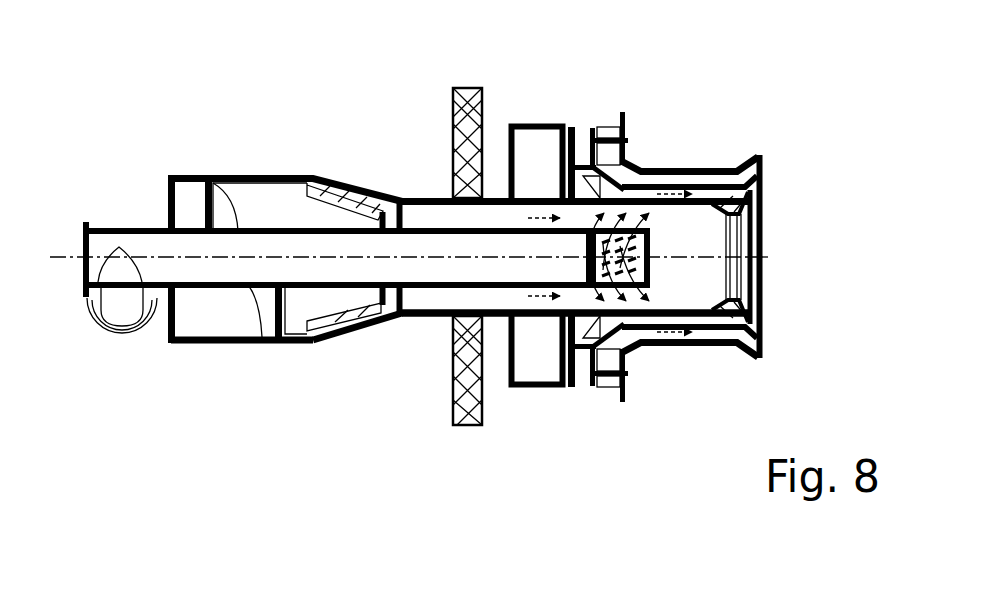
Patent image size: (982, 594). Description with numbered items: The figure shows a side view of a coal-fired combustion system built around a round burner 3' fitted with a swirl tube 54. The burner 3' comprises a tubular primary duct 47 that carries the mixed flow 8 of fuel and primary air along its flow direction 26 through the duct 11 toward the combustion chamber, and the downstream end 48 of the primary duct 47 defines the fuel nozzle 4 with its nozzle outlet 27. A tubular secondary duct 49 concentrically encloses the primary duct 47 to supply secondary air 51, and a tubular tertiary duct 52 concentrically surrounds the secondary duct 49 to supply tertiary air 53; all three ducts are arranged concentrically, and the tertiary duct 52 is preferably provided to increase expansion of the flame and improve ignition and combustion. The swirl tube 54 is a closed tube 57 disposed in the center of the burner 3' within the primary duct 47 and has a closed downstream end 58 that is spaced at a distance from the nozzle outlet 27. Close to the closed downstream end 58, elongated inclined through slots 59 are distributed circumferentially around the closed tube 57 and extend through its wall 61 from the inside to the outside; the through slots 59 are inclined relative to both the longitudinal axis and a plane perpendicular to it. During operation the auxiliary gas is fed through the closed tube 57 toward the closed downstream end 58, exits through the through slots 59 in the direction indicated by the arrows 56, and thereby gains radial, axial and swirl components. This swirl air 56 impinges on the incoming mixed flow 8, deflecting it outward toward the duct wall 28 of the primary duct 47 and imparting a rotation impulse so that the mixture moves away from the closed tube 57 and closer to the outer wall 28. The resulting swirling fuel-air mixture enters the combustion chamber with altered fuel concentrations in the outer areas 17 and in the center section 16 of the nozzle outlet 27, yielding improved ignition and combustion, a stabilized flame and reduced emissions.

The round burner 3' is at (122, 176).
The duct 11 is at (350, 245).
The swirl tube 54 is at (467, 250).
The closed tube 57 is at (483, 273).
The duct wall 28 is at (415, 317).
The nozzle outlet 27 is at (652, 242).
The primary duct 47 is at (522, 212).
The mixed flow of fuel and primary air 8 is at (547, 300).
The flow direction 26 is at (547, 300).
The through slots 59 is at (590, 240).
The swirl air 56 is at (608, 300).
The secondary duct 49 is at (640, 200).
The wall 61 is at (580, 285).
The tertiary air 53 is at (678, 330).
The secondary air 51 is at (676, 190).
The tertiary duct 52 is at (722, 332).
The downstream end 48 is at (762, 196).
The fuel nozzle 4 is at (760, 210).
The closed downstream end 58 is at (757, 225).
The center section 16 is at (749, 268).
The peripheral nozzle sections 17 is at (750, 303).